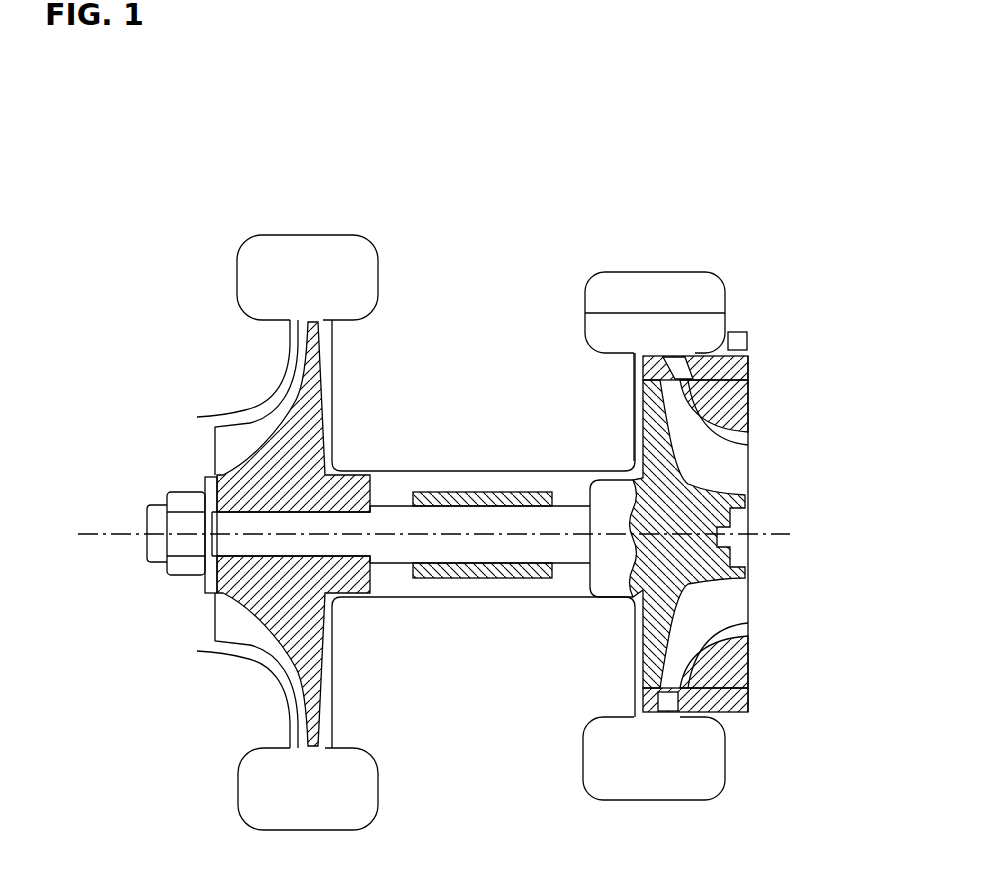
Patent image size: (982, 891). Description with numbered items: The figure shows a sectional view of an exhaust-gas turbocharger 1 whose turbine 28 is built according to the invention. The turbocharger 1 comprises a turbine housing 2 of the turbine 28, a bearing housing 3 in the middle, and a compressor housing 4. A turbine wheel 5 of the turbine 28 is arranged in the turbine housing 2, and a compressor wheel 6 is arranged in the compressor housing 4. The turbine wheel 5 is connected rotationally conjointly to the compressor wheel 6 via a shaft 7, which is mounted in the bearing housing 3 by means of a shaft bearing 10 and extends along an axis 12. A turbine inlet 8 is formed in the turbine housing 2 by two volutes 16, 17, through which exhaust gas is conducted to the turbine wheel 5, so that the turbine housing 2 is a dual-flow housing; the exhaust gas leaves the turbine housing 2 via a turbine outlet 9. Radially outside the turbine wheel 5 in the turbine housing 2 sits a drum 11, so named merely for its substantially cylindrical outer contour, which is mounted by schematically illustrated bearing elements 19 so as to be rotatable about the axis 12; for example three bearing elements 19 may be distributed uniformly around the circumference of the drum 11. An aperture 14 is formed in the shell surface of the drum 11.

The exhaust-gas turbocharger 1 is at (494, 232).
The turbine housing 2 is at (622, 458).
The bearing housing 3 is at (477, 600).
The compressor housing 4 is at (268, 395).
The turbine wheel 5 is at (717, 573).
The compressor wheel 6 is at (262, 588).
The shaft 7 is at (393, 515).
The turbine inlet 8 is at (711, 491).
The turbine outlet 9 is at (763, 507).
The shaft bearing 10 is at (507, 578).
The drum 11 is at (741, 534).
The axis 12 is at (85, 535).
The aperture 14 is at (675, 364).
The volute 16 is at (702, 292).
The volute 17 is at (702, 332).
The bearing element 19 is at (745, 341).
The turbine 28 is at (643, 242).